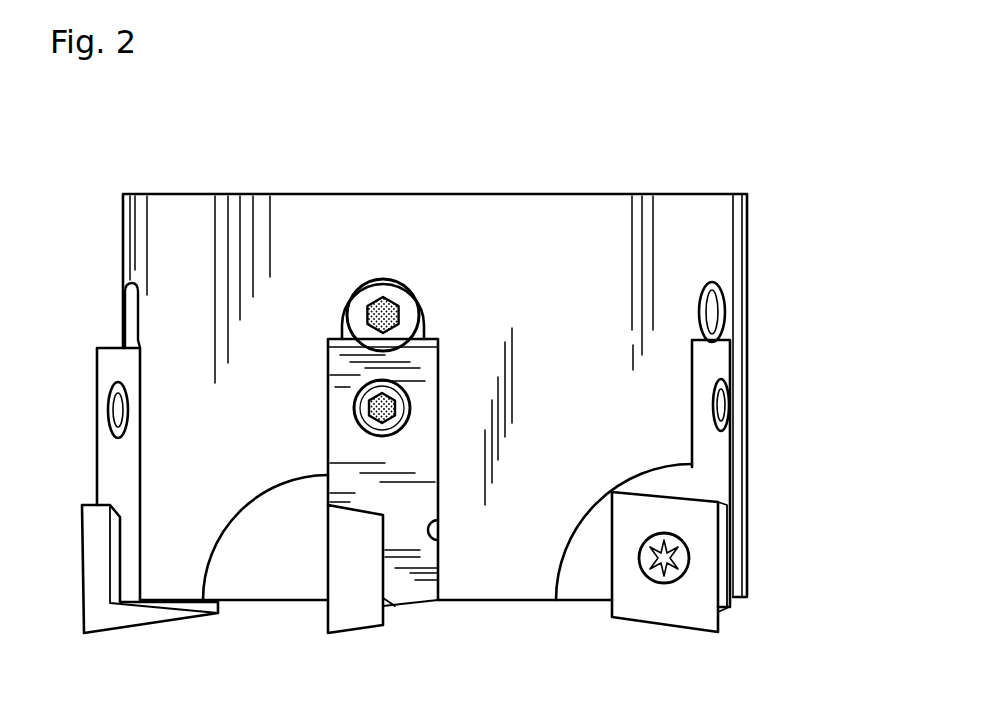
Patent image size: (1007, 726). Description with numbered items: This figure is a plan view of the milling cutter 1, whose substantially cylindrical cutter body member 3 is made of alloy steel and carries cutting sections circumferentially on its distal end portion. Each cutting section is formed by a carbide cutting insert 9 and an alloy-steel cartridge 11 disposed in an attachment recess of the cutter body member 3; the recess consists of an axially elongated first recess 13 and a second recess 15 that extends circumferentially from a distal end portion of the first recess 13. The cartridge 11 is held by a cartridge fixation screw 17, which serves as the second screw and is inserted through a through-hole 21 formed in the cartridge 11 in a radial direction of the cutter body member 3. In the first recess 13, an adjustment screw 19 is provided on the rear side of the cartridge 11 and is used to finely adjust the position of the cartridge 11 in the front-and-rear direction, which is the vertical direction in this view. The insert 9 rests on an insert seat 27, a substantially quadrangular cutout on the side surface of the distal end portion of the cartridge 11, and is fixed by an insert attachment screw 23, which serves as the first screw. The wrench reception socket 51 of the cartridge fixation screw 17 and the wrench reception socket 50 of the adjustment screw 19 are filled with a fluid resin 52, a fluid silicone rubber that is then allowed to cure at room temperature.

The milling cutter 1 is at (781, 166).
The cutter body member 3 is at (501, 218).
The cutting insert 9 is at (97, 610).
The cartridge 11 is at (113, 468).
The first recess 13 is at (443, 535).
The second recess 15 is at (277, 583).
The cartridge fixation screw 17 is at (405, 412).
The adjustment screw 19 is at (382, 292).
The through-hole 21 is at (355, 412).
The insert attachment screw 23 is at (655, 585).
The insert seat 27 is at (385, 605).
The wrench reception socket of the adjustment screw 50 is at (400, 303).
The wrench reception socket of the cartridge fixation screw 51 is at (410, 382).
The fluid resin 52 is at (368, 303).